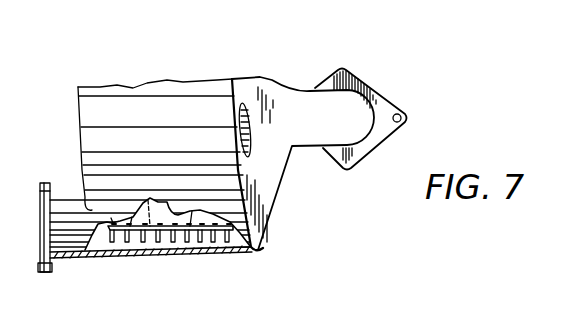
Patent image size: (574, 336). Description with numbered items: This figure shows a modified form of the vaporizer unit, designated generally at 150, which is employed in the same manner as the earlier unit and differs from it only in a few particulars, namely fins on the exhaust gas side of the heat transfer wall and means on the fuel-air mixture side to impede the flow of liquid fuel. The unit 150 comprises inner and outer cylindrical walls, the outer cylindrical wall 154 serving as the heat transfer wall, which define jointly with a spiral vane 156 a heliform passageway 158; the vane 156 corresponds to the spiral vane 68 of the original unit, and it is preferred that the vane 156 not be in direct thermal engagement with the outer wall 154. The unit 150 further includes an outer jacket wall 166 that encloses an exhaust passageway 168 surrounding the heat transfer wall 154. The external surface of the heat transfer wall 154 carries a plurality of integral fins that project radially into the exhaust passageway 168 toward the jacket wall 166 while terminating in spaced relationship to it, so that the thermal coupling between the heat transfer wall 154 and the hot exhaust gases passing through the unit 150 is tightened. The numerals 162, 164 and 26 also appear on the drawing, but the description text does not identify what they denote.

The modified vaporizer unit 150 is at (146, 60).
The outer cylindrical wall 154 is at (222, 238).
The spiral vane 156 is at (165, 200).
The heliform passageway 158 is at (140, 237).
The handle body with end plate 162 is at (311, 126).
The end flange 164 is at (75, 254).
The outer jacket wall 166 is at (97, 110).
The exhaust passageway 168 is at (161, 257).
The element 26 is at (426, 0).
The spiral vane of the original unit 68 is at (491, 0).